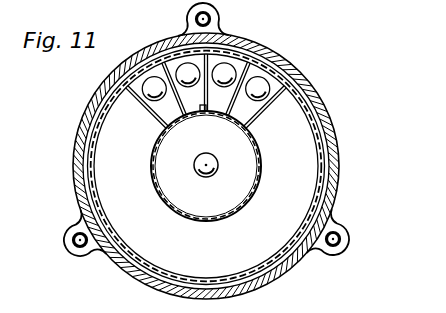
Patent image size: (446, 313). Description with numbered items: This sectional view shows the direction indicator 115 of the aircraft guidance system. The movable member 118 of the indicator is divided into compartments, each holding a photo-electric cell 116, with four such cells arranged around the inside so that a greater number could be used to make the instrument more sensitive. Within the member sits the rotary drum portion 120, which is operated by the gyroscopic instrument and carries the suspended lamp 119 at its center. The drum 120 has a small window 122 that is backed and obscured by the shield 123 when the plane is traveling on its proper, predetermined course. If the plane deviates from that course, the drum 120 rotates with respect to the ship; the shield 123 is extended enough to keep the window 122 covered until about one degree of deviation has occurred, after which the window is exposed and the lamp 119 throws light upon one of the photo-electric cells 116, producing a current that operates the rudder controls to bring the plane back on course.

The direction indicator 115 is at (327, 190).
The photo-electric cell 116 is at (281, 50).
The movable member 118 is at (332, 128).
The lamp 119 is at (199, 176).
The rotary drum portion 120 is at (152, 177).
The window 122 is at (206, 112).
The shield 123 is at (254, 118).